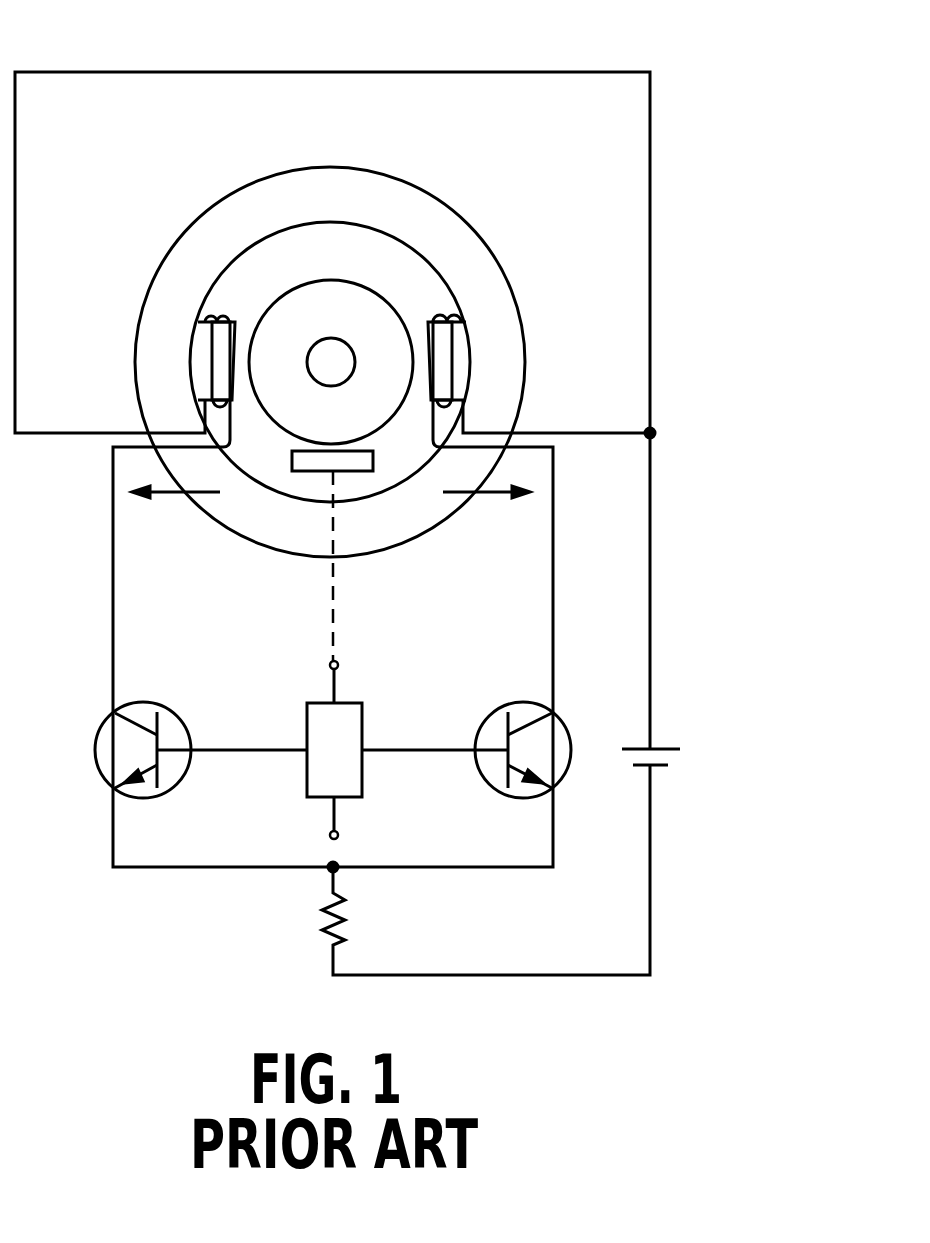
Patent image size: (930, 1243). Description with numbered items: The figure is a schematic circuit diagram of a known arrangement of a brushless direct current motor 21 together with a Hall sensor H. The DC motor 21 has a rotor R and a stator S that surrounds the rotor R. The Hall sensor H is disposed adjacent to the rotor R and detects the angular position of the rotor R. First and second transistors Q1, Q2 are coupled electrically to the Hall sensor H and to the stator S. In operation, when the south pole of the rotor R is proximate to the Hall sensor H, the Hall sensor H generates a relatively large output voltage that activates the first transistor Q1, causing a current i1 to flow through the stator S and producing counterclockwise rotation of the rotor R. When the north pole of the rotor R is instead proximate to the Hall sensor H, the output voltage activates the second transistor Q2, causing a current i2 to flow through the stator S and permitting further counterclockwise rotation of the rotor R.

The brushless direct current motor 21 is at (462, 212).
The rotor R is at (393, 302).
The stator S is at (230, 352).
The Hall sensor H is at (350, 471).
The current i1 is at (195, 500).
The current i2 is at (469, 500).
The first transistor Q1 is at (183, 763).
The second transistor Q2 is at (479, 762).